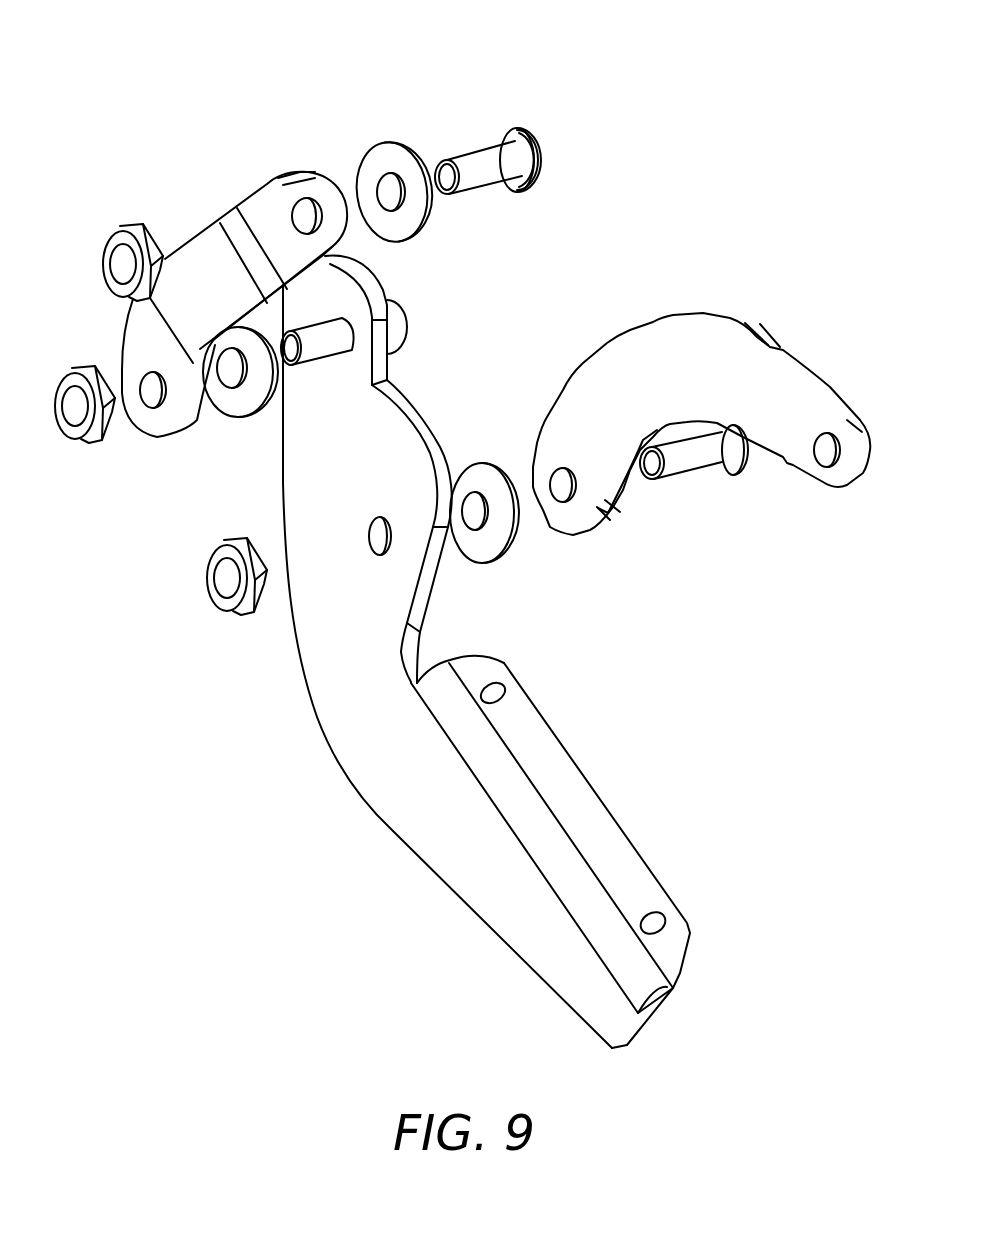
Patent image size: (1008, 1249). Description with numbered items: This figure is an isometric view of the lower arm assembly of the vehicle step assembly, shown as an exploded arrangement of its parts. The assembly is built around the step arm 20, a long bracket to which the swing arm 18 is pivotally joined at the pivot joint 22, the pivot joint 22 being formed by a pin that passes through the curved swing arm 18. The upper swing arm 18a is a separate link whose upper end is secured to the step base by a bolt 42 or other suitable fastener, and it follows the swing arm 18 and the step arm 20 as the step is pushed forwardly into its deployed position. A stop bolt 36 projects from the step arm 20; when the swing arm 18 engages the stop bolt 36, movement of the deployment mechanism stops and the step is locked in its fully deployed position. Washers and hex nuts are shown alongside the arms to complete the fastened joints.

The swing arm 18 is at (740, 326).
The upper swing arm 18a is at (200, 252).
The step arm 20 is at (365, 753).
The pivot joint 22 is at (717, 468).
The stop bolt 36 is at (407, 321).
The bolt 42 is at (512, 132).